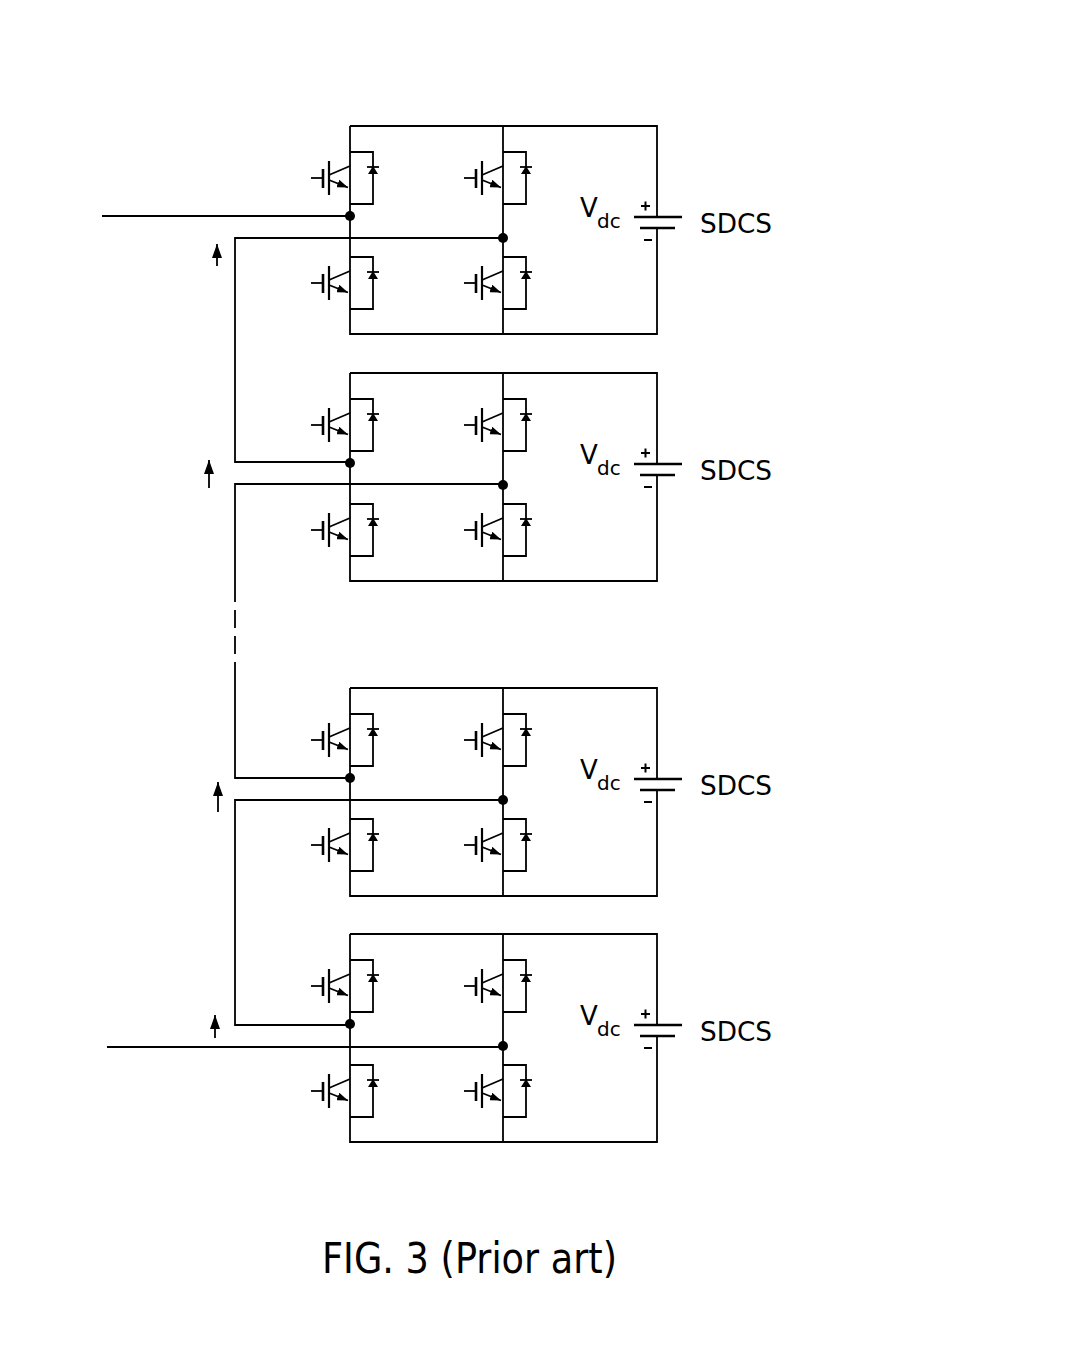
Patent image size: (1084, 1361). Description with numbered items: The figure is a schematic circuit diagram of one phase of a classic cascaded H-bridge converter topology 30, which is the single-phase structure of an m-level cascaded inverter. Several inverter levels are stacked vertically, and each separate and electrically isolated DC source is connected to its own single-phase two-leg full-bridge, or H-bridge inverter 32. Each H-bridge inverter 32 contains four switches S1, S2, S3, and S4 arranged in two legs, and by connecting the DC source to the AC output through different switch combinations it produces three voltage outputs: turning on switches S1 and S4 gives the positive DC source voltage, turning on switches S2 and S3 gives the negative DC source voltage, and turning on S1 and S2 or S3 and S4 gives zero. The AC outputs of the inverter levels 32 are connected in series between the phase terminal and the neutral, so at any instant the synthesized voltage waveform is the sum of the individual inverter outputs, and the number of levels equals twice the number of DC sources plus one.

The cascaded H-bridge converter topology 30 is at (150, 78).
The H-bridge inverter 32 is at (525, 613).
The switch S1 is at (322, 582).
The switch S2 is at (475, 582).
The switch S3 is at (322, 687).
The switch S4 is at (475, 687).